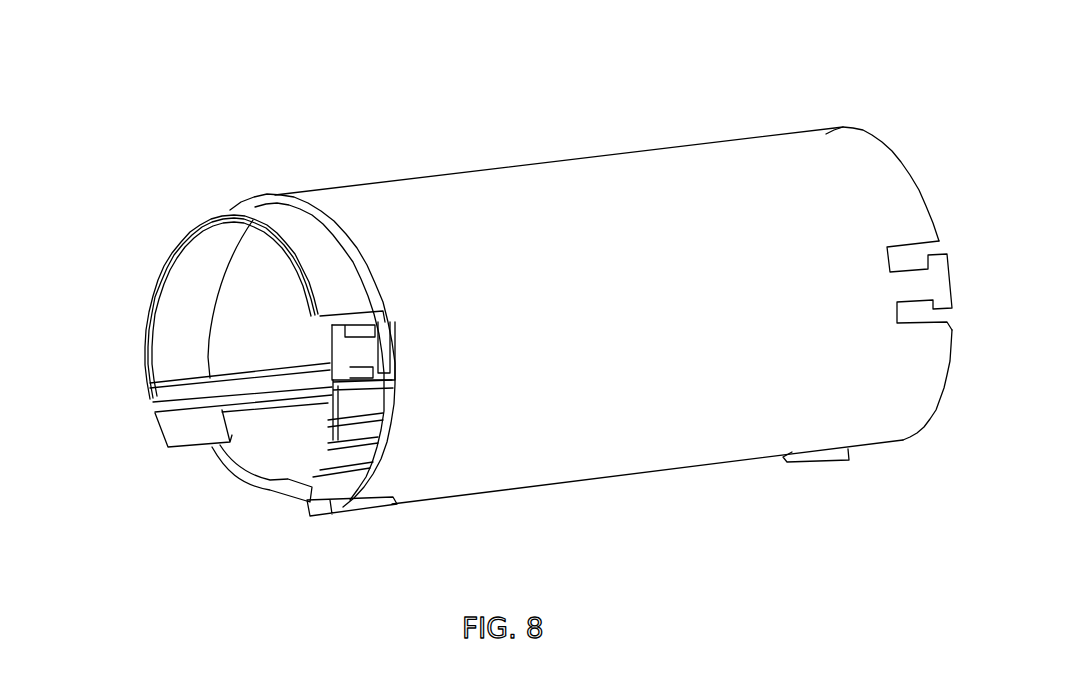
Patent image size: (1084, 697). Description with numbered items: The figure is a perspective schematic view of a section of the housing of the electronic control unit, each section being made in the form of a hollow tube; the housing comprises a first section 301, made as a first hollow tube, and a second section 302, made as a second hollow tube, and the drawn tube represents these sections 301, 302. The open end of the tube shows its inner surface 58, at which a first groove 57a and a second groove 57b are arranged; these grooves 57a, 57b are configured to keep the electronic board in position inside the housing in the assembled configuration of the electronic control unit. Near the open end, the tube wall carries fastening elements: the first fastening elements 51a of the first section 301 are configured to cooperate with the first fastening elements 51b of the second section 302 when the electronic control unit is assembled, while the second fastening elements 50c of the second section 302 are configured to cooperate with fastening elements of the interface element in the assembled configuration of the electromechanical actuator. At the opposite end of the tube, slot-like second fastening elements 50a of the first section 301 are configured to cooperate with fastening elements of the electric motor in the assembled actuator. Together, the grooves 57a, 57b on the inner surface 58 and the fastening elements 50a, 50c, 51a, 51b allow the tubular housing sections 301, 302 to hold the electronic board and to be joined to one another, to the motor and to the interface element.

The first section 301 is at (498, 316).
The second section 302 is at (498, 316).
The inner surface 58 is at (227, 280).
The first groove 57a is at (163, 402).
The second groove 57b is at (325, 433).
The second fastening elements 50c is at (462, 345).
The first fastening elements 51a is at (355, 351).
The first fastening elements 51b is at (837, 285).
The second fastening elements 50a is at (925, 283).